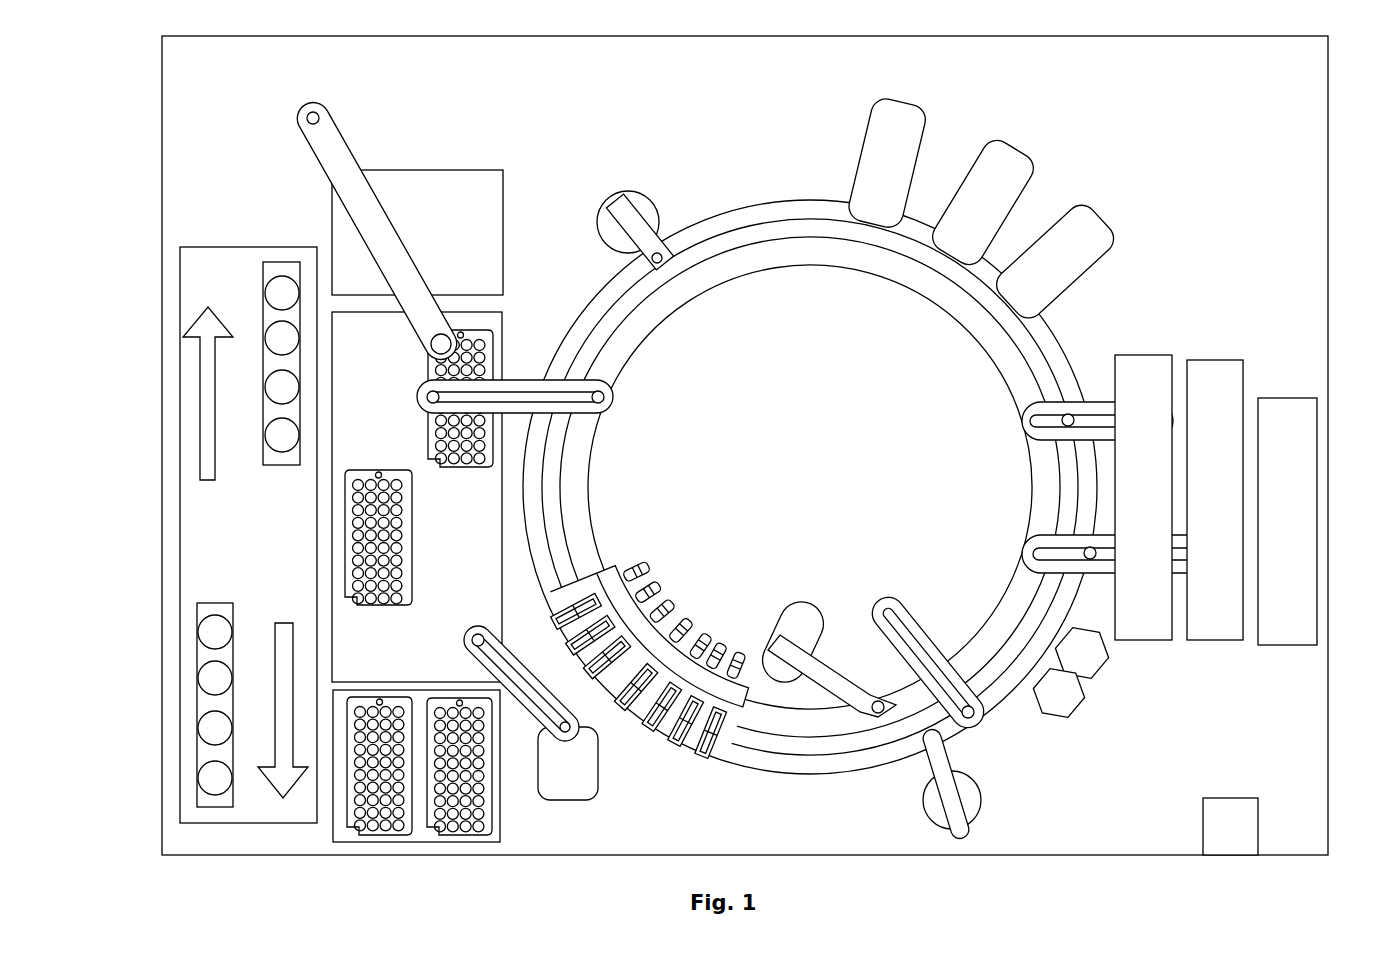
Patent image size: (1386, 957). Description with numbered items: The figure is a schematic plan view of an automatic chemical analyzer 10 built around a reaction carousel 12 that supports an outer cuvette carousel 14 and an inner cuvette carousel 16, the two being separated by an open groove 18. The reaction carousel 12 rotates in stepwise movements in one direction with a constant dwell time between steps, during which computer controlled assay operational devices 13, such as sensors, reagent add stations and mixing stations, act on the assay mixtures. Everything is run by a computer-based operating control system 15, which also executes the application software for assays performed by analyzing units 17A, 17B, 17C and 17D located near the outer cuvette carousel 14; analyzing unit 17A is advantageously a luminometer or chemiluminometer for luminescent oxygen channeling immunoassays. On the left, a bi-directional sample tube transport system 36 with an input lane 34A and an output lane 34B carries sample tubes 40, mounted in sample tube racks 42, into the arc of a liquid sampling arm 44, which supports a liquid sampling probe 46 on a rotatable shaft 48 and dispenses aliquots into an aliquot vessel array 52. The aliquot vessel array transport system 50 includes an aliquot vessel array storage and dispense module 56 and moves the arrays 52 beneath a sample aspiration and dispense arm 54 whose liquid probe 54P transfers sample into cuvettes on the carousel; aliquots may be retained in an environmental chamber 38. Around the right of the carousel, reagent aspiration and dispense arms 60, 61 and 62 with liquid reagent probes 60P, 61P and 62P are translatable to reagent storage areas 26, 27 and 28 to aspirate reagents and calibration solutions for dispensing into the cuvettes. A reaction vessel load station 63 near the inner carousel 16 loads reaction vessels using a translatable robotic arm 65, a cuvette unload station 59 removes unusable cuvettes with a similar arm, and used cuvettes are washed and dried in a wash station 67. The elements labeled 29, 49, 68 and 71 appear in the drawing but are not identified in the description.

The automatic chemical analyzer 10 is at (160, 57).
The reaction carousel 12 is at (675, 197).
The assay operational devices 13 is at (1090, 688).
The outer cuvette carousel 14 is at (763, 215).
The computer-based operating control system 15 is at (1230, 826).
The inner cuvette carousel 16 is at (813, 253).
The analyzing unit 17A is at (887, 163).
The analyzing unit 17B is at (983, 202).
The analyzing unit 17C is at (1054, 261).
The analyzing unit 17D is at (568, 763).
The open groove 18 is at (745, 242).
The reagent storage area 26 is at (722, 596).
The reagent storage area 27 is at (1217, 643).
The reagent storage area 28 is at (1152, 641).
The reagent station 29 is at (1282, 645).
The input lane 34A is at (205, 414).
The output lane 34B is at (283, 668).
The sample tube transport system 36 is at (188, 635).
The environmental chamber 38 is at (430, 182).
The sample tubes 40 is at (212, 625).
The sample tube racks 42 is at (237, 806).
The liquid sampling arm 44 is at (352, 160).
The liquid sampling probe 46 is at (441, 332).
The rotatable shaft 48 is at (320, 104).
The plate transfer arm 49 is at (480, 630).
The aliquot vessel array transport system 50 is at (352, 335).
The aliquot vessel array 52 is at (485, 330).
The sample aspiration and dispense arm 54 is at (533, 385).
The liquid probe 54P is at (605, 398).
The aliquot vessel array storage and dispense module 56 is at (502, 835).
The cuvette unload station 59 is at (632, 190).
The reagent aspiration and dispense arm 60 is at (897, 592).
The liquid reagent probe 60P is at (969, 718).
The reagent aspiration and dispense arm 61 is at (1245, 536).
The liquid reagent probe 61P is at (1090, 550).
The reagent aspiration and dispense arm 62 is at (1172, 408).
The liquid reagent probe 62P is at (1068, 410).
The reaction vessel load station 63 is at (982, 798).
The translatable robotic arm 65 is at (808, 606).
The wash station 67 is at (877, 715).
The wash arm pivot 68 is at (650, 262).
The pipette tip racks 71 is at (745, 700).